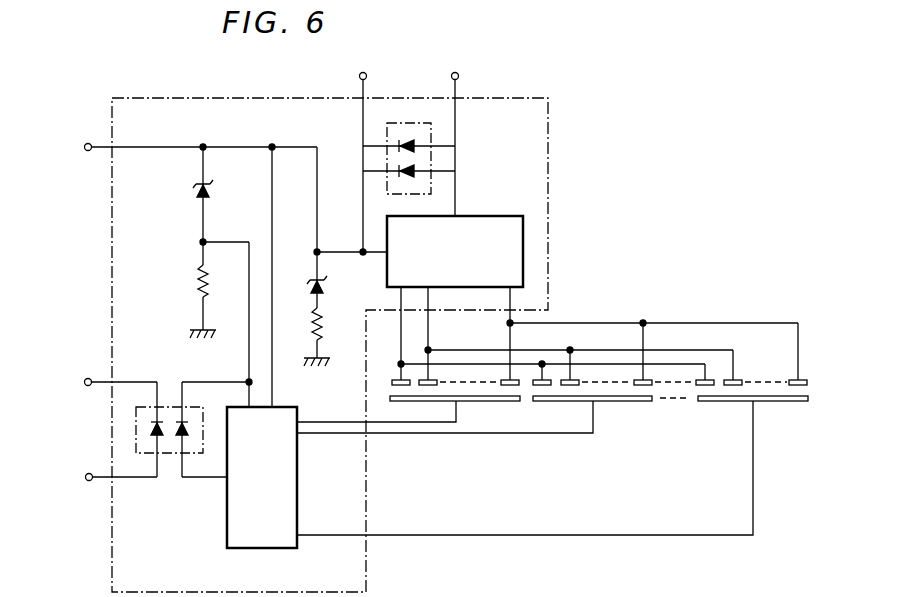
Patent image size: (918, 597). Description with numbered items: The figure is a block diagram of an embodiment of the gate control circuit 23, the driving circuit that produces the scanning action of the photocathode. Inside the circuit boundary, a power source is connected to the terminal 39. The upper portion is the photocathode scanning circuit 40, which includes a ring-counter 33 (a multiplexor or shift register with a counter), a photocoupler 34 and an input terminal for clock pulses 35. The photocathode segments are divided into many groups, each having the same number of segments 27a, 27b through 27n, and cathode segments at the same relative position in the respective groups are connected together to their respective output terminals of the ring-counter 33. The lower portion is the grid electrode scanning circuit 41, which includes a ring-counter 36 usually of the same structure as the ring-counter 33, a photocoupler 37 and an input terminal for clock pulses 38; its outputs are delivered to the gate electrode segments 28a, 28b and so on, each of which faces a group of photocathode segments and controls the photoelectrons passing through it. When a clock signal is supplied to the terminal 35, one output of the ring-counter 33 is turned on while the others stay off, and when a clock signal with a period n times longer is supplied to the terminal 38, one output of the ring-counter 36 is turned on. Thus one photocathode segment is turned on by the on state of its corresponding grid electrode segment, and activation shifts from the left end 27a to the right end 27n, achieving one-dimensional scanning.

The gate control circuit 23 is at (198, 95).
The terminal 39 is at (186, 148).
The input terminal for clock pulses 35 is at (460, 82).
The photocoupler 34 is at (432, 150).
The ring-counter 33 is at (455, 235).
The photocathode scanning circuit 40 is at (476, 167).
The input terminal for clock pulses 38 is at (88, 482).
The photocoupler 37 is at (163, 456).
The ring-counter 36 is at (239, 477).
The grid electrode scanning circuit 41 is at (174, 480).
The photocathode segment 27a is at (391, 383).
The photocathode segment 27b is at (431, 378).
The photocathode segment 27n is at (516, 378).
The gate electrode segment 28a is at (487, 402).
The gate electrode segment 28b is at (628, 402).